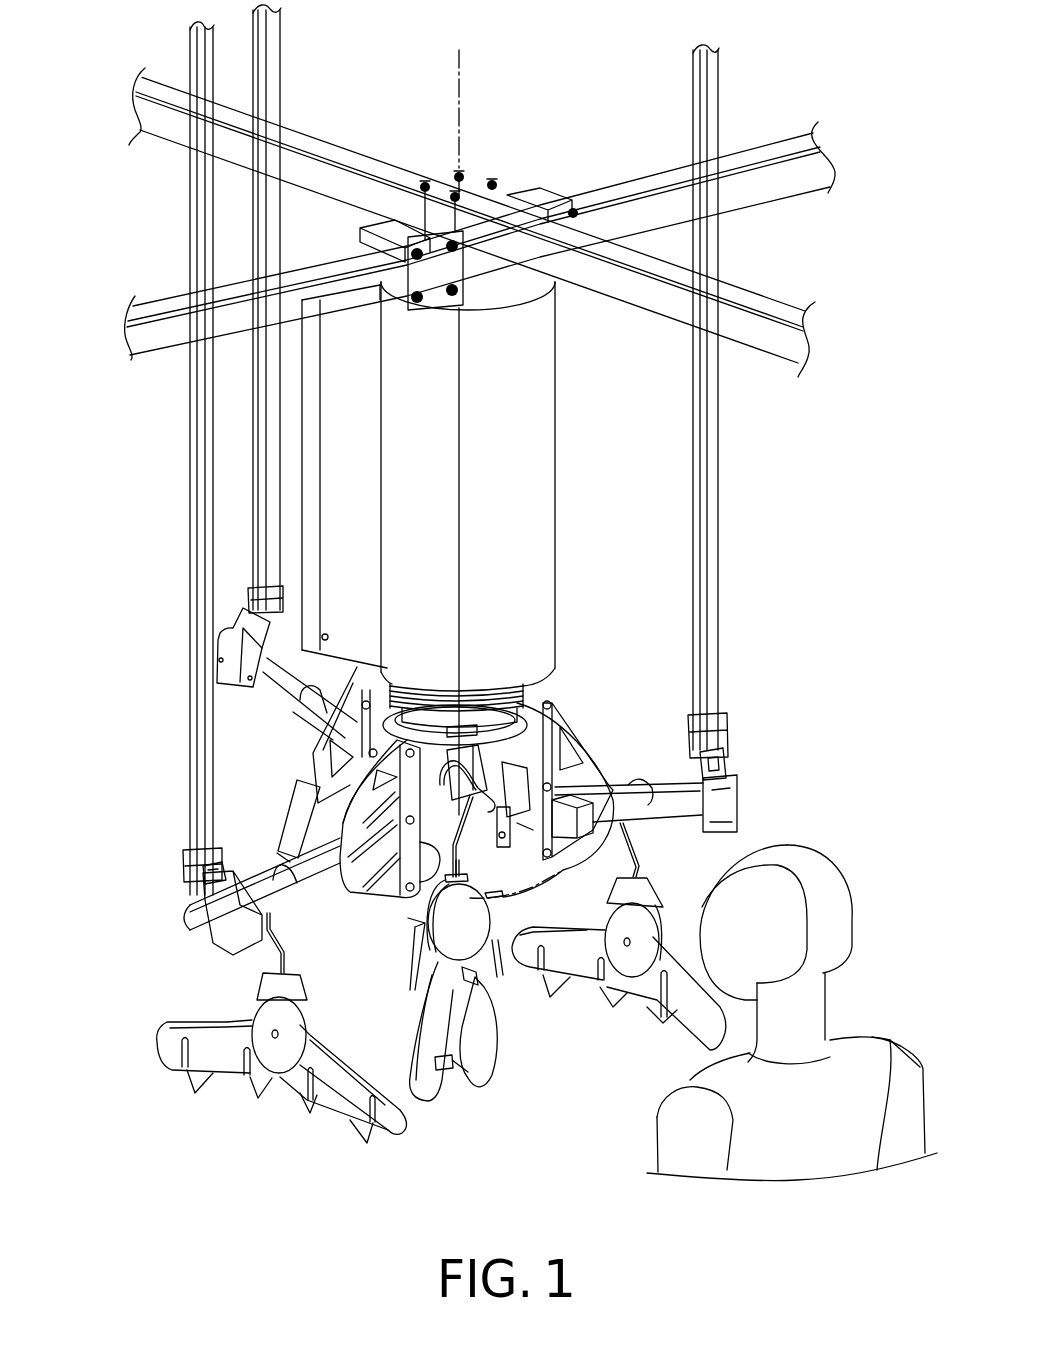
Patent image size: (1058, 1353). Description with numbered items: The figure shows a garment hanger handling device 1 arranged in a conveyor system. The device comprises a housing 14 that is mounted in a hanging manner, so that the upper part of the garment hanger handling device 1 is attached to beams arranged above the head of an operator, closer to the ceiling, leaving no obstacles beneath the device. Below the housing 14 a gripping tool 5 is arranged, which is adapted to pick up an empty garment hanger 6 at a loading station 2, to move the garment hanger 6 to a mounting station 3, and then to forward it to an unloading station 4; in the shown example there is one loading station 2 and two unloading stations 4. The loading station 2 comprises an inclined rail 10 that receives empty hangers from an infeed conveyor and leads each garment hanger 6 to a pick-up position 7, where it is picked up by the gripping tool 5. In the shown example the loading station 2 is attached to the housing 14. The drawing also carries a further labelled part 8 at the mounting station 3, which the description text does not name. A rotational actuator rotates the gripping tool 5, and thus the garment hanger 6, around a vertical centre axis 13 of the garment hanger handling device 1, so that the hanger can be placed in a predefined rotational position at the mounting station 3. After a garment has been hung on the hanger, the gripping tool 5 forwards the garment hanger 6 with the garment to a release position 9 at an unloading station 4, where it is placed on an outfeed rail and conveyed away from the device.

The garment hanger handling device 1 is at (790, 54).
The loading station 2 is at (177, 610).
The mounting station 3 is at (481, 1104).
The unloading station 4 is at (757, 763).
The gripping tool 5 is at (480, 803).
The garment hanger 6 is at (270, 1055).
The pick-up position 7 is at (356, 916).
The gripper legs 8 is at (455, 1108).
The release position 9 is at (757, 793).
The rail 10 is at (260, 665).
The vertical centre axis 13 is at (462, 100).
The housing 14 is at (518, 437).